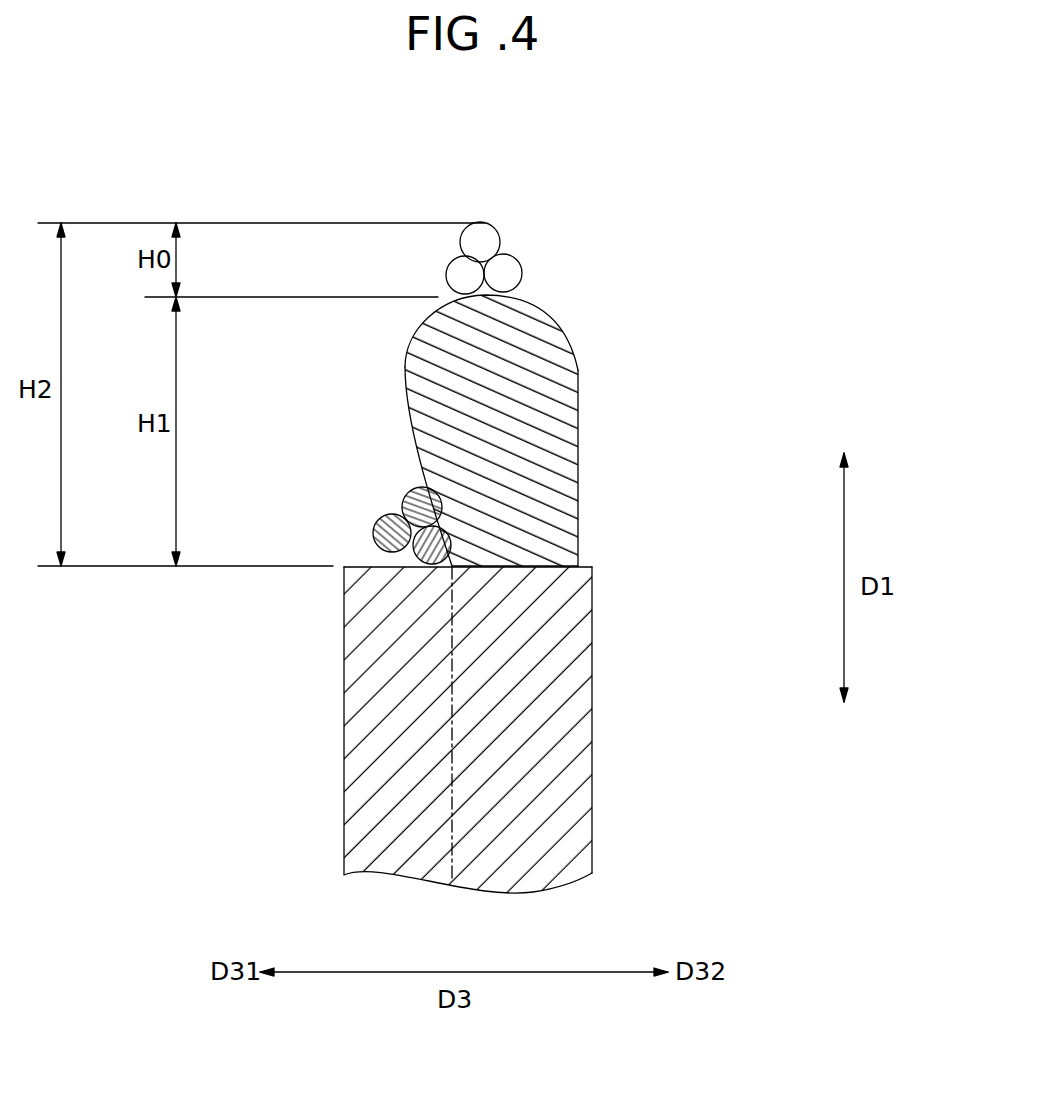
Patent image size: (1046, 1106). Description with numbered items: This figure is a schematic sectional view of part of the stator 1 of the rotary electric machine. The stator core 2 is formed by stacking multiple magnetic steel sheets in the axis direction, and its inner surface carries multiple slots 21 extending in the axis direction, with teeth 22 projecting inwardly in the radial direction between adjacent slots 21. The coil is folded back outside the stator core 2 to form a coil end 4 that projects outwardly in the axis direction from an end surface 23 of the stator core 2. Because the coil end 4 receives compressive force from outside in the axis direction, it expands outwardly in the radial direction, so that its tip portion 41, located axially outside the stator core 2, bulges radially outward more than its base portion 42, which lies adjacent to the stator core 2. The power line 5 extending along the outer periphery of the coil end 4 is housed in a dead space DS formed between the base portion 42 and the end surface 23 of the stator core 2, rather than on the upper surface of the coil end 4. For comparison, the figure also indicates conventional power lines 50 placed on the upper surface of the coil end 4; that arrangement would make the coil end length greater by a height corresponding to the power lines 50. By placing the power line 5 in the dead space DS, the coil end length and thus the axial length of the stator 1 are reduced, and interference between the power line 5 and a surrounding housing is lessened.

The stator 1 is at (860, 180).
The stator core 2 is at (345, 787).
The coil end 4 is at (579, 412).
The power line 5 is at (365, 490).
The slot 21 is at (587, 702).
The tooth 22 is at (587, 820).
The end surface 23 is at (366, 567).
The tip portion 41 is at (548, 306).
The base portion 42 is at (580, 550).
The power lines 50 is at (512, 238).
The dead space DS is at (407, 460).